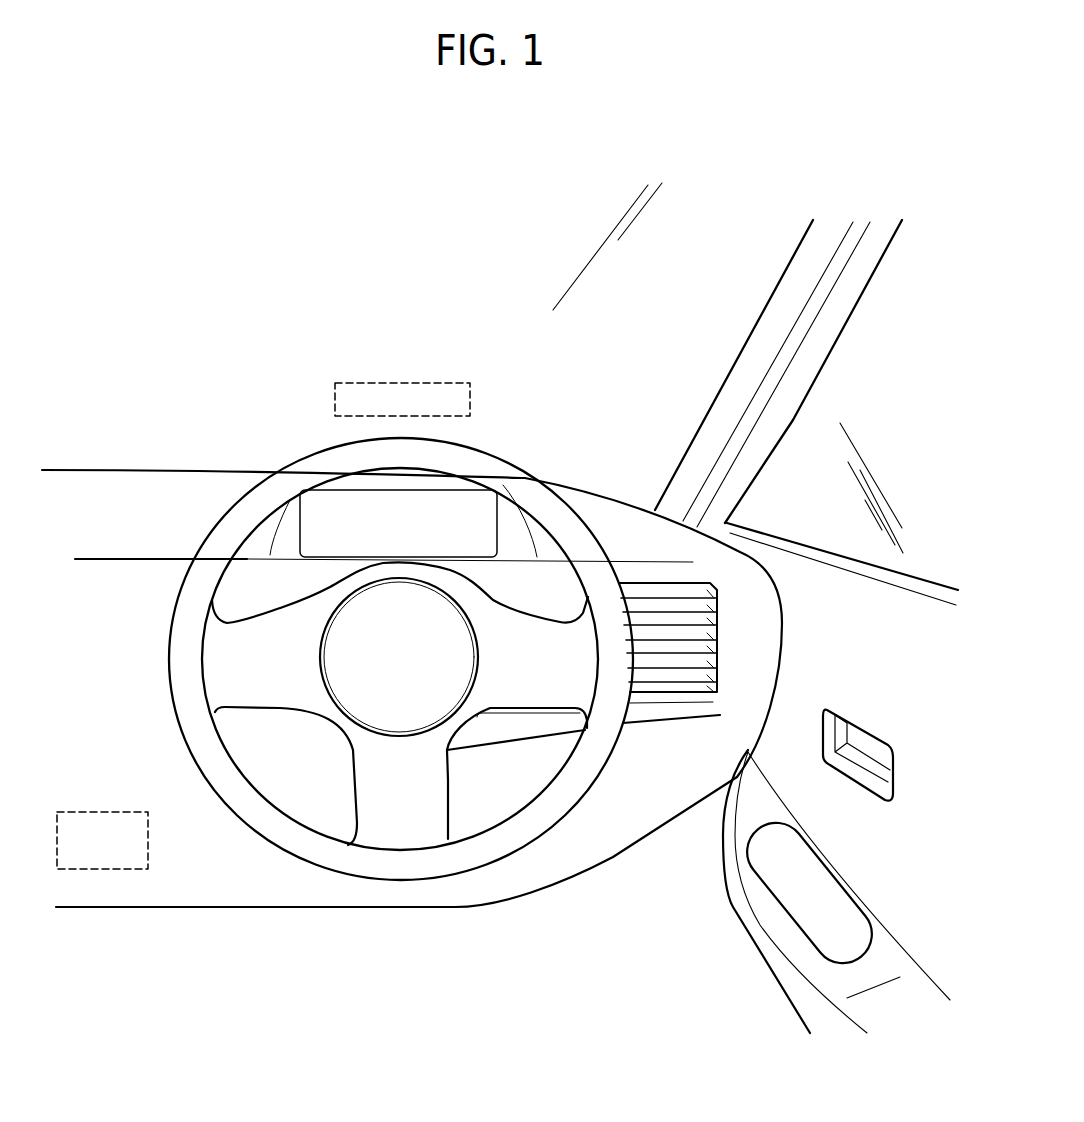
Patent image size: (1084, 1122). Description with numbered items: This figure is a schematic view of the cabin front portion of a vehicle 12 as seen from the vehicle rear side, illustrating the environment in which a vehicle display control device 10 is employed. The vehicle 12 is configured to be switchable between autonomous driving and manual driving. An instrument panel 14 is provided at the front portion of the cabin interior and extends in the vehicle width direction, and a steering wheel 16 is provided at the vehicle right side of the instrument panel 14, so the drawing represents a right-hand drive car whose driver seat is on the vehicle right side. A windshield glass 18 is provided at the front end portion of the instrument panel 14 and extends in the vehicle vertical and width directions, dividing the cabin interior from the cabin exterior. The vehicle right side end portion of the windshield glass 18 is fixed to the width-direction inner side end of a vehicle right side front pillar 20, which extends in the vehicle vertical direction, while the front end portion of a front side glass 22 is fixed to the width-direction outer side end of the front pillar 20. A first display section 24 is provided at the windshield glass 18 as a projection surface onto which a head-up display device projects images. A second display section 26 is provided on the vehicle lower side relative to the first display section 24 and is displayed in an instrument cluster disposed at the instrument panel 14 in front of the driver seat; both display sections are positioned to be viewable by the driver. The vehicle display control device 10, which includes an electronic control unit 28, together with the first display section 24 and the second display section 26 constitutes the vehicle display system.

The vehicle display control device 10 is at (294, 312).
The vehicle 12 is at (337, 208).
The instrument panel 14 is at (612, 858).
The steering wheel 16 is at (588, 528).
The windshield glass 18 is at (678, 343).
The front pillar 20 is at (790, 265).
The front side glass 22 is at (927, 527).
The first display section 24 is at (403, 383).
The second display section 26 is at (333, 517).
The electronic control unit 28 is at (93, 870).